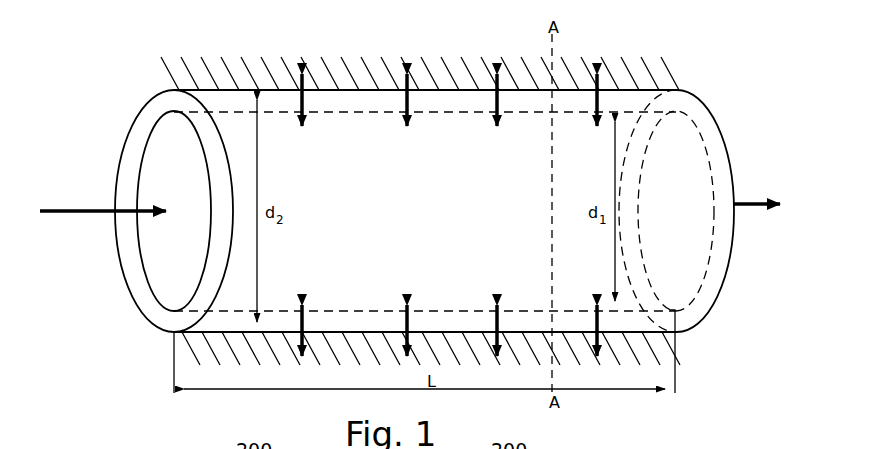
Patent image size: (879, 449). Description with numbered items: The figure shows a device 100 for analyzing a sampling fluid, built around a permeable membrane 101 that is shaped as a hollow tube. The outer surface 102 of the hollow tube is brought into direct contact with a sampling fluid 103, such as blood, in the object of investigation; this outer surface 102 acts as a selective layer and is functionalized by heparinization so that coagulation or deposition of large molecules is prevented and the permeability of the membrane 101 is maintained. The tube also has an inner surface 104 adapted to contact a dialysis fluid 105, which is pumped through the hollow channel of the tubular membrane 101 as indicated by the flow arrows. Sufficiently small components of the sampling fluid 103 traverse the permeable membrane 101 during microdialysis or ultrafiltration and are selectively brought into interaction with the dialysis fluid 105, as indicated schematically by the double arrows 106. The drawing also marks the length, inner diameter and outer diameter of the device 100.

The device for analyzing a sampling fluid 100 is at (682, 66).
The permeable membrane 101 is at (213, 103).
The outer surface 102 is at (267, 89).
The sampling fluid 103 is at (537, 71).
The inner surface 104 is at (343, 113).
The dialysis fluid 105 is at (70, 210).
The double arrows 106 is at (497, 116).